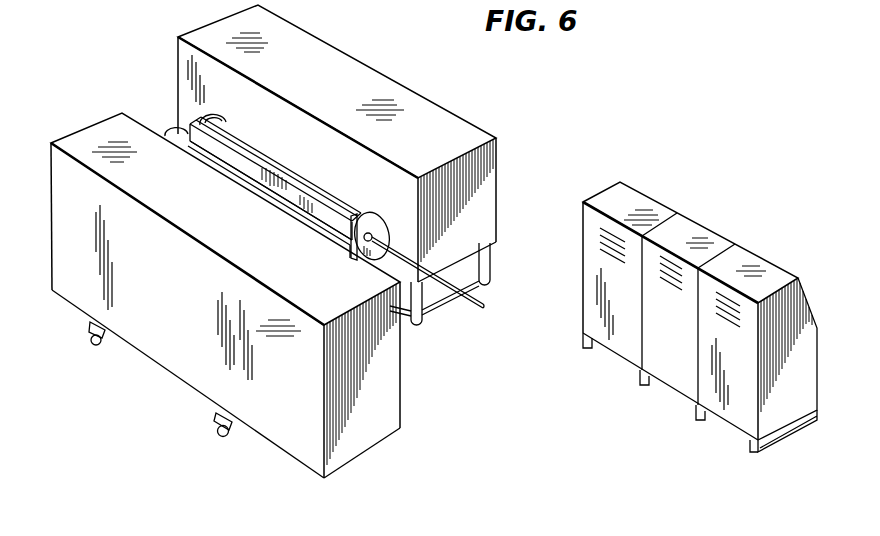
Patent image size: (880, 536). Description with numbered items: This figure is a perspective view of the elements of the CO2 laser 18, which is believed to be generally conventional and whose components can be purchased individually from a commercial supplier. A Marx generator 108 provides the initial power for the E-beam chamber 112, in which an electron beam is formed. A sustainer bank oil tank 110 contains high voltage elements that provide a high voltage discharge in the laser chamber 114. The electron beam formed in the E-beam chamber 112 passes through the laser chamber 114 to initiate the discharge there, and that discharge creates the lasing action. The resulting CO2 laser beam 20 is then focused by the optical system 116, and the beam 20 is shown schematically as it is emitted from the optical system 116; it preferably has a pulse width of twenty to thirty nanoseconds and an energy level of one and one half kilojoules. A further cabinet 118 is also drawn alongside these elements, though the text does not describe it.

The CO2 laser 18 is at (541, 90).
The CO2 laser beam 20 is at (481, 306).
The Marx generator 108 is at (185, 314).
The sustainer bank oil tank 110 is at (336, 93).
The E-beam chamber 112 is at (246, 186).
The laser chamber 114 is at (290, 166).
The optical system 116 is at (378, 216).
The control cabinet 118 is at (684, 340).